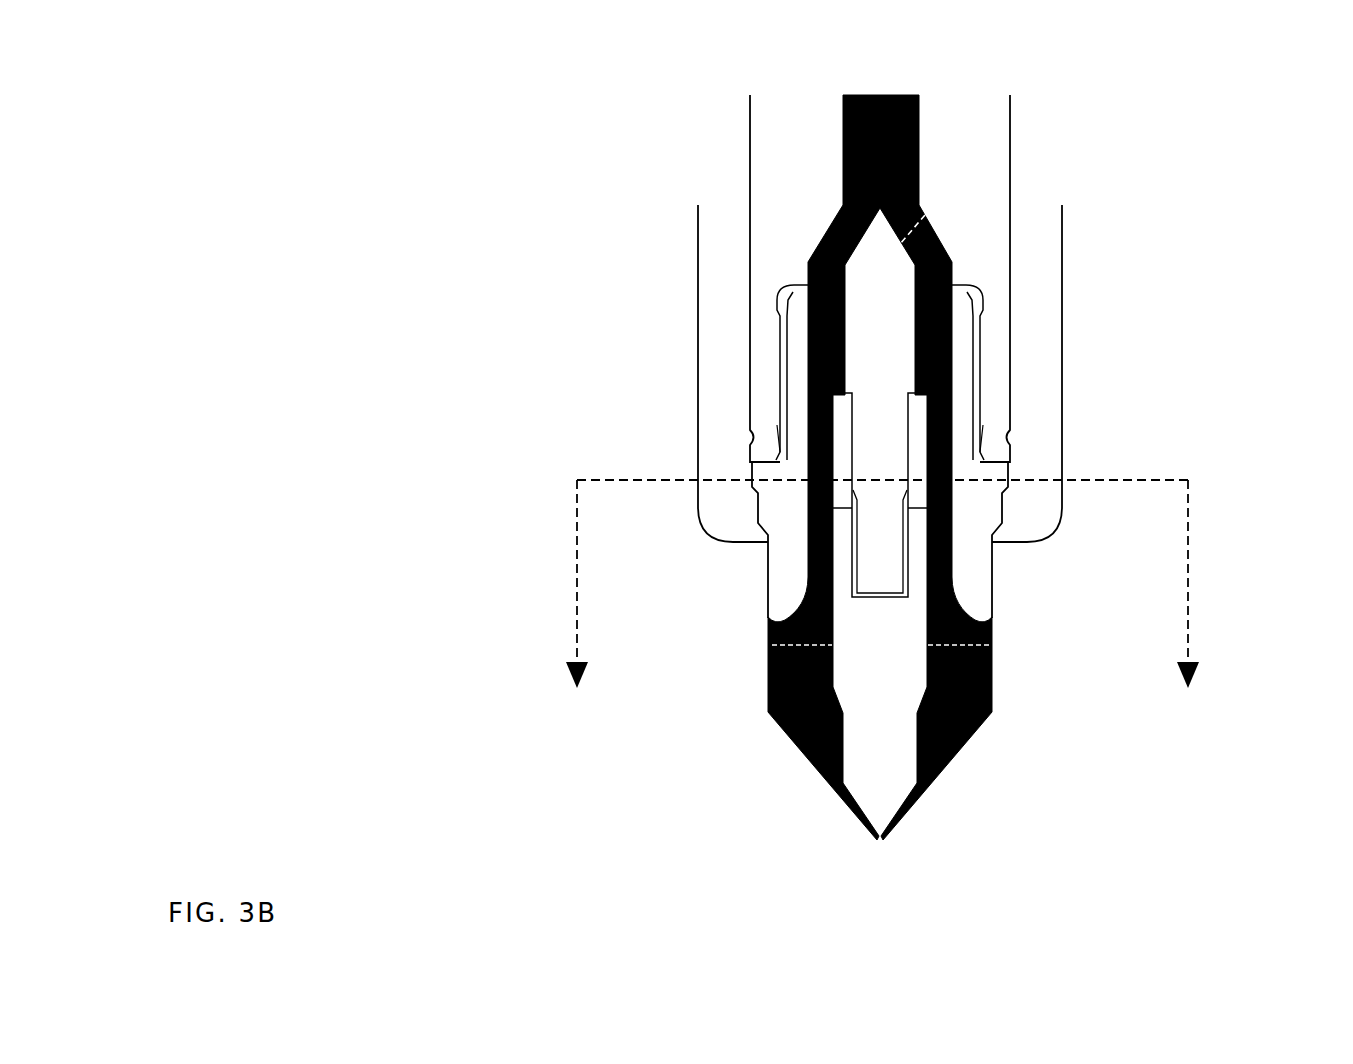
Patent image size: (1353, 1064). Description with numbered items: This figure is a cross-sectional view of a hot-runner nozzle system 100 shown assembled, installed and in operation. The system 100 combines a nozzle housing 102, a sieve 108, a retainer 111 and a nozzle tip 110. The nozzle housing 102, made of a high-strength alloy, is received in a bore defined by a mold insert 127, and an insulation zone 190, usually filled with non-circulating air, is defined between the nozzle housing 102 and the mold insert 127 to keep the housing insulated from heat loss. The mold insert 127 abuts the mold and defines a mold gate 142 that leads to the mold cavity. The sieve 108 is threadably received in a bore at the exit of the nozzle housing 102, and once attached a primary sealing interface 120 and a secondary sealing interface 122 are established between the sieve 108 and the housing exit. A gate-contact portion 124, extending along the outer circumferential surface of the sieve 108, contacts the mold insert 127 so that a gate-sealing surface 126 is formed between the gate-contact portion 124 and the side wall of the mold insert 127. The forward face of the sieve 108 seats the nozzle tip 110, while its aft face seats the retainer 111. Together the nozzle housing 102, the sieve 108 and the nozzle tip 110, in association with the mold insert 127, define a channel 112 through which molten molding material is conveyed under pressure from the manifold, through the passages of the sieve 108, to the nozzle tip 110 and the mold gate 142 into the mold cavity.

The hot-runner nozzle system 100 is at (516, 175).
The nozzle housing 102 is at (1010, 133).
The sieve 108 is at (968, 543).
The nozzle tip 110 is at (880, 770).
The retainer 111 is at (925, 215).
The channel 112 is at (967, 750).
The primary sealing interface 120 is at (960, 283).
The secondary sealing interface 122 is at (997, 463).
The gate-contact portion 124 is at (975, 598).
The gate-sealing surface 126 is at (767, 577).
The mold insert 127 is at (657, 445).
The mold gate 142 is at (890, 858).
The insulation zone 190 is at (720, 233).